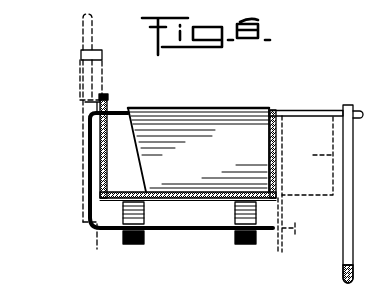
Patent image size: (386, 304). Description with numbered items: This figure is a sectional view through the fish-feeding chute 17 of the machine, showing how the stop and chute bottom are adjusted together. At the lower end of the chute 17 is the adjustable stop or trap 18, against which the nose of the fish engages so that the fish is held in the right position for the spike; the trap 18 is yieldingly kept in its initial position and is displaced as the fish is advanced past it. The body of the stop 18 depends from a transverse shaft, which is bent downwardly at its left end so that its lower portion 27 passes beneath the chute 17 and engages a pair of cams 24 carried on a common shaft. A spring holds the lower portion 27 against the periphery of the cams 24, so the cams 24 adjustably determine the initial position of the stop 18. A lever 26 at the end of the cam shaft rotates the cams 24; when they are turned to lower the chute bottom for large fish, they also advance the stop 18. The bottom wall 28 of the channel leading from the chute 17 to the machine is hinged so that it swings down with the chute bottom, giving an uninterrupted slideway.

The chute 17 is at (282, 155).
The adjustable stop or trap 18 is at (226, 127).
The cams 24 is at (128, 247).
The lever 26 is at (85, 42).
The lower portion of the shaft 27 is at (163, 232).
The bottom wall of the channel 28 is at (210, 193).